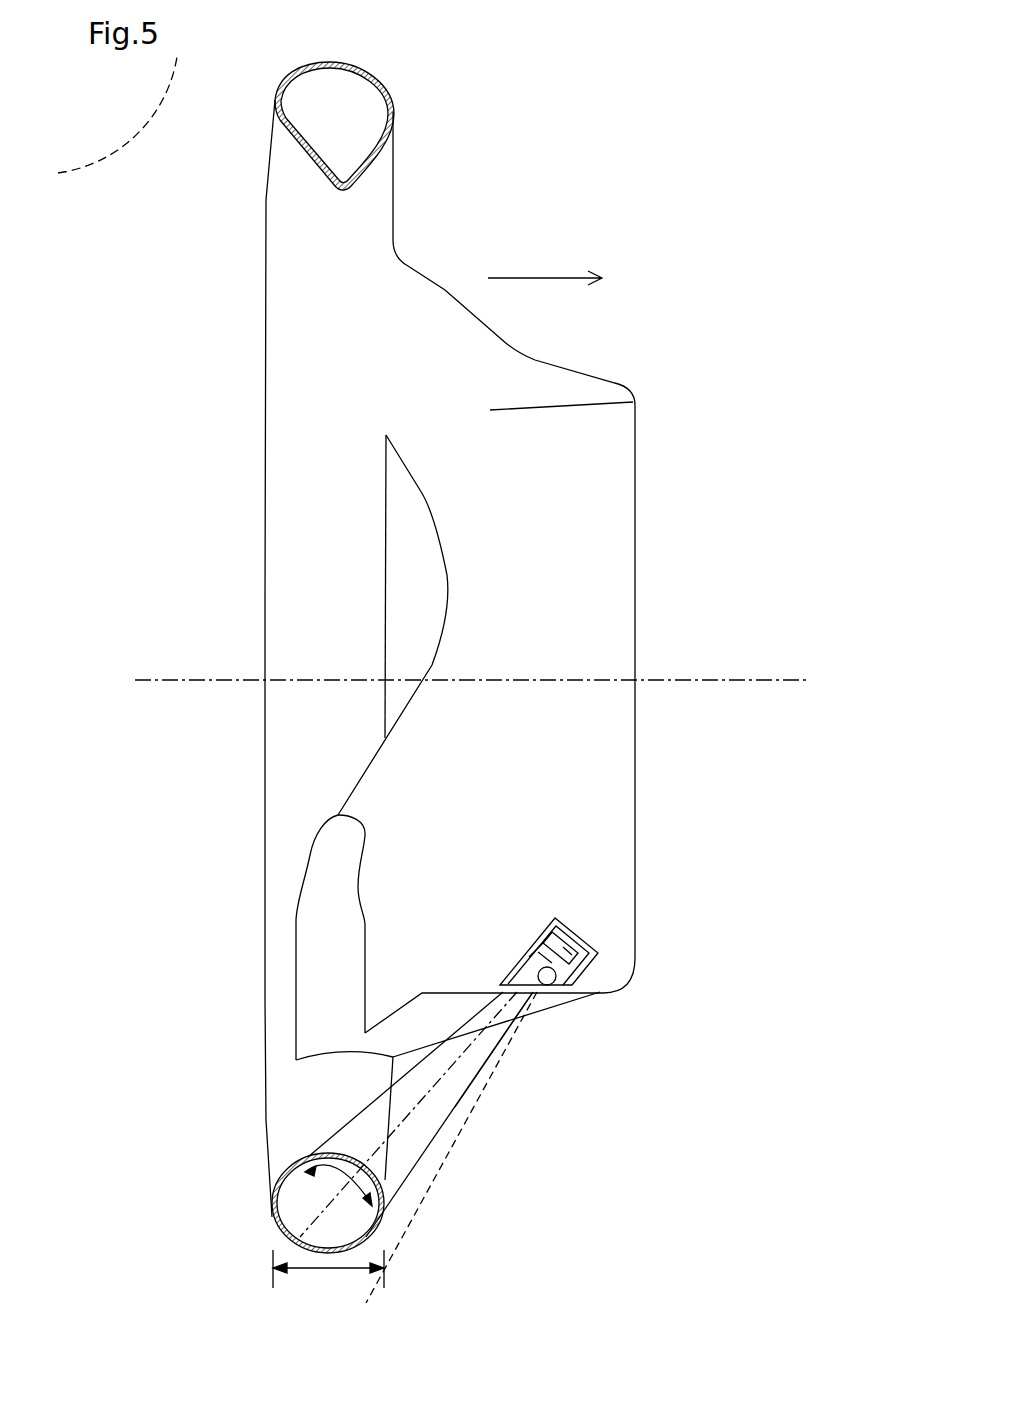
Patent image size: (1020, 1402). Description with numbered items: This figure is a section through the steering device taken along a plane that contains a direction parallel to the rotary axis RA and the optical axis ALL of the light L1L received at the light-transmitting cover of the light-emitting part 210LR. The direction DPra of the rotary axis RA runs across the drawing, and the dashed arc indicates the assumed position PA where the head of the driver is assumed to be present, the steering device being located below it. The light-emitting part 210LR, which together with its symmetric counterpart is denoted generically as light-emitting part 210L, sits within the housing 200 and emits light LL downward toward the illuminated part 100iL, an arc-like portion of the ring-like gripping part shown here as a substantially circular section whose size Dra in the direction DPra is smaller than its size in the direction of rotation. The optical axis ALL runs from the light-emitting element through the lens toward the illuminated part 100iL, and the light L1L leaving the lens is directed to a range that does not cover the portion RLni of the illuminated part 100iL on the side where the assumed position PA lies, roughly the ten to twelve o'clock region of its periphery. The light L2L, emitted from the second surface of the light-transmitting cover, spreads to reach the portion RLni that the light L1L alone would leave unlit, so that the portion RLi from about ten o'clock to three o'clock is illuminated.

The assumed position of the head of a driver PA is at (133, 145).
The direction of the rotary axis DPra is at (522, 278).
The rotary axis RA is at (710, 680).
The camera unit 200 is at (568, 1008).
The light-emitting part 210LR is at (553, 1027).
The light-emitting part 210L is at (545, 998).
The light L2L is at (458, 1112).
The light LL is at (508, 1079).
The optical axis ALL is at (398, 1128).
The light L1L is at (403, 1234).
The portion of the illuminated part RLni is at (348, 1148).
The portion of the illuminated part RLi is at (338, 1180).
The illuminated part 100iL is at (272, 1219).
The size of the illuminated part in the rotary-axis direction Dra is at (328, 1275).